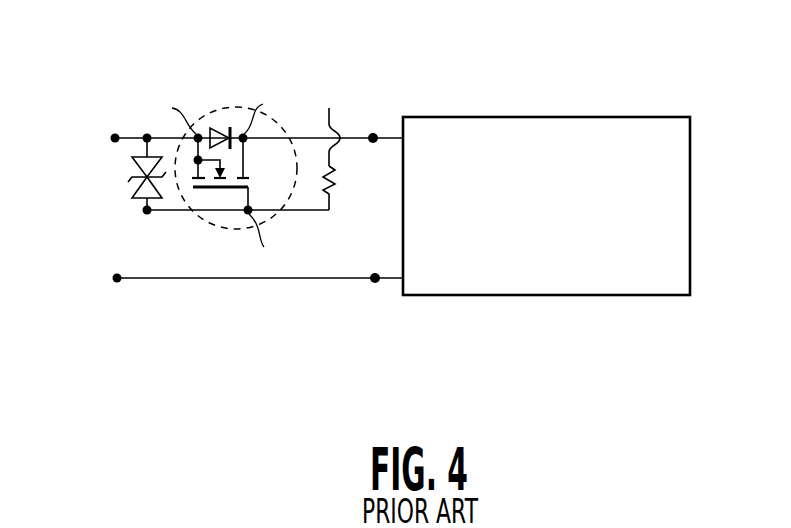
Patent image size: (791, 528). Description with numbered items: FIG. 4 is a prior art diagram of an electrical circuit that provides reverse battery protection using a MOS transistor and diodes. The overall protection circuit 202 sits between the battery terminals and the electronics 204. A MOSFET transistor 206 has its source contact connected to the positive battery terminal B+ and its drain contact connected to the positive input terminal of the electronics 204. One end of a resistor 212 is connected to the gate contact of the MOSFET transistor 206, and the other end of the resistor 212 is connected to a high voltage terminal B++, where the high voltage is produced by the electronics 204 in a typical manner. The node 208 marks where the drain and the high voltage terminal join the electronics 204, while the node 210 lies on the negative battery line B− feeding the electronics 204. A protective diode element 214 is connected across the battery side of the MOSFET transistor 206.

The prior art protection circuit 202 is at (106, 78).
The electronics 204 is at (481, 116).
The MOSFET with series diode 206 is at (222, 106).
The B++ node 208 is at (375, 133).
The B- node 210 is at (373, 284).
The resistor 212 is at (337, 188).
The transient voltage suppressor diode 214 is at (128, 190).